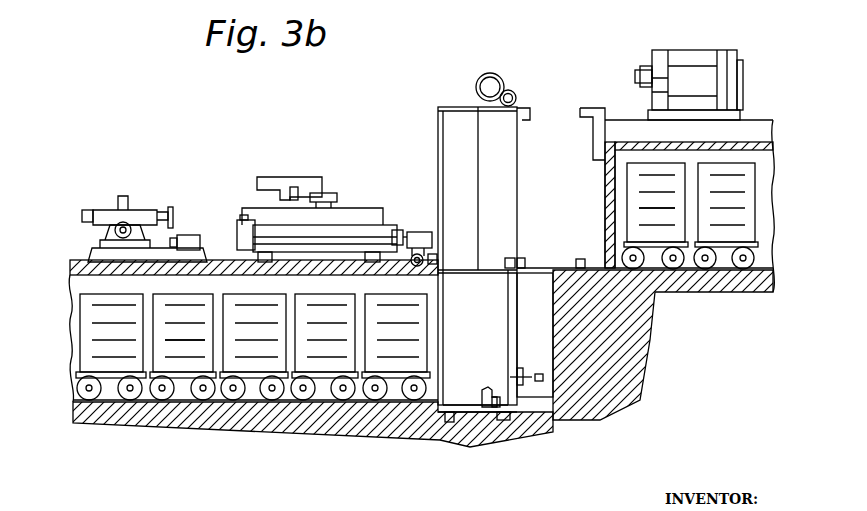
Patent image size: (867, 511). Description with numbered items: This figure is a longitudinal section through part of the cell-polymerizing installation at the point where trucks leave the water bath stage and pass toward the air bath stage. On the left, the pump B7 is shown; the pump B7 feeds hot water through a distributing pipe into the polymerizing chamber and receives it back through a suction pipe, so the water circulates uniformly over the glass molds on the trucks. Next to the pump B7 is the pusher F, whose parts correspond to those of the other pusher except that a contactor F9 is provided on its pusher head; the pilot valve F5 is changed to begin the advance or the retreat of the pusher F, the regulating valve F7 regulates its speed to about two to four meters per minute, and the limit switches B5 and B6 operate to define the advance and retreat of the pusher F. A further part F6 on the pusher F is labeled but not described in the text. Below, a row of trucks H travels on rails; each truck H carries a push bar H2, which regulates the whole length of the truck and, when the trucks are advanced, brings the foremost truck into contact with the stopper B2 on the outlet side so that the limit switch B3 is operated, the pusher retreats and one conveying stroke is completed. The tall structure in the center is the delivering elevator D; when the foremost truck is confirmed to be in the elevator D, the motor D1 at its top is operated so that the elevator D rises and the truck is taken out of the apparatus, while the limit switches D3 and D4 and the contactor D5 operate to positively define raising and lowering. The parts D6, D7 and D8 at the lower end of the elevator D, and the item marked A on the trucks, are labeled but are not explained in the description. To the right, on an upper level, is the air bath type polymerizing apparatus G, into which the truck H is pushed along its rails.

The pump B7 is at (135, 203).
The air bath type polymerizing apparatus G is at (76, 266).
The pusher F is at (347, 237).
The regulating valve F7 is at (240, 218).
The feeding device guide F6 is at (292, 190).
The pilot valve F5 is at (325, 193).
The contactor F9 is at (428, 237).
The limit switch B6 is at (434, 262).
The delivering elevator D is at (504, 206).
The motor D1 is at (501, 92).
The limit switch D3 is at (526, 112).
The limit switch D4 is at (523, 258).
The contactor D5 is at (508, 258).
The limit switch B5 is at (579, 259).
The stopper B2 is at (522, 370).
The limit switch B3 is at (543, 378).
The hoist cage bottom D6 is at (507, 400).
The hoist roller D7 is at (495, 407).
The hoist foot D8 is at (450, 422).
The truck H is at (181, 377).
The push bar H2 is at (356, 376).
The load / stack on cart A is at (196, 340).